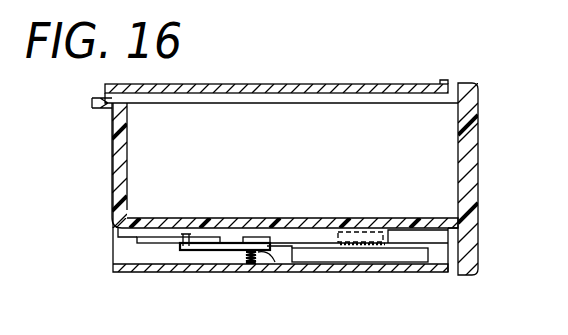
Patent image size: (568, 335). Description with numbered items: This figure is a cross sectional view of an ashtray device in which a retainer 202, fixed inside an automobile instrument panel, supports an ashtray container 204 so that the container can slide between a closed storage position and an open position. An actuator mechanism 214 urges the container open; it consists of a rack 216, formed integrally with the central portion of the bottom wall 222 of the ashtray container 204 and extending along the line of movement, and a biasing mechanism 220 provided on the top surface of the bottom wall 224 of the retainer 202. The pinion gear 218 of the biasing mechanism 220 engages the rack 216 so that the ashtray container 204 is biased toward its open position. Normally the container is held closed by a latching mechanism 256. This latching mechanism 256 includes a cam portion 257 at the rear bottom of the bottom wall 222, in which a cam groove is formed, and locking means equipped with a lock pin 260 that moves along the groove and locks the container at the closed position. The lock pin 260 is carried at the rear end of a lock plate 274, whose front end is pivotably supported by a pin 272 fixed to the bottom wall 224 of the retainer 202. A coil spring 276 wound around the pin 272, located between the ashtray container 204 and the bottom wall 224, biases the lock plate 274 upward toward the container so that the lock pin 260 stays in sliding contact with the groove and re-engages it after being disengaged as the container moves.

The retainer 202 is at (288, 80).
The ashtray container 204 is at (480, 100).
The actuator mechanism 214 is at (407, 225).
The rack 216 is at (303, 230).
The pinion gear 218 is at (358, 230).
The biasing mechanism 220 is at (442, 248).
The bottom wall of the ashtray container 222 is at (255, 222).
The bottom wall of the retainer 224 is at (375, 263).
The latching mechanism 256 is at (165, 252).
The cam portion 257 is at (151, 232).
The lock pin 260 is at (188, 233).
The pin 272 is at (253, 262).
The lock plate 274 is at (205, 250).
The coil spring 276 is at (274, 258).